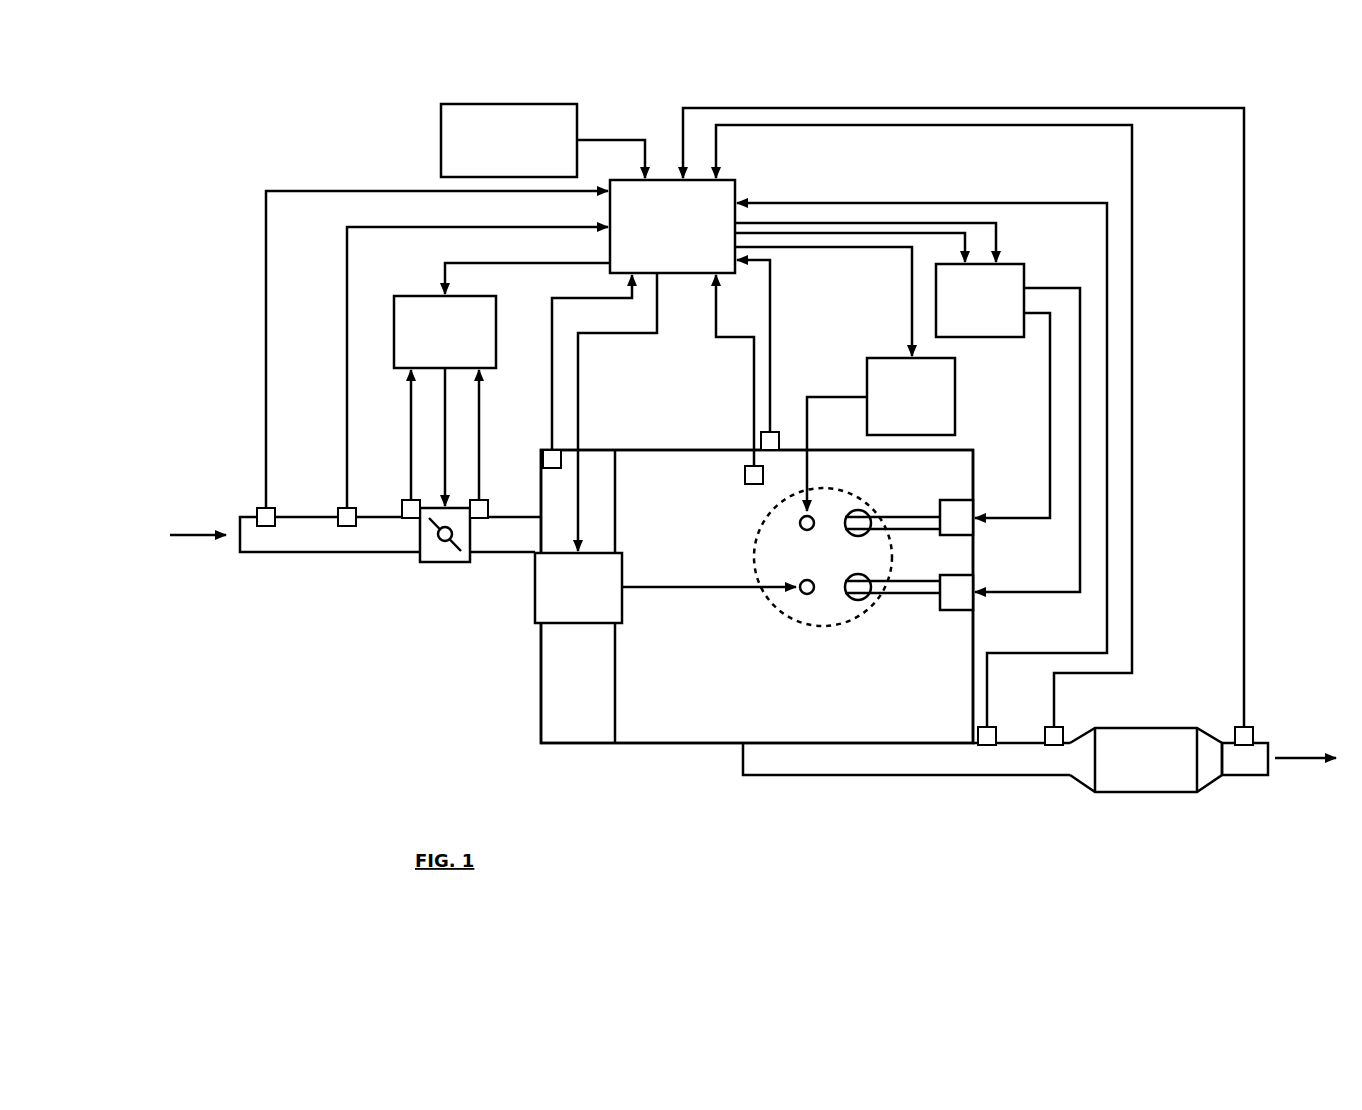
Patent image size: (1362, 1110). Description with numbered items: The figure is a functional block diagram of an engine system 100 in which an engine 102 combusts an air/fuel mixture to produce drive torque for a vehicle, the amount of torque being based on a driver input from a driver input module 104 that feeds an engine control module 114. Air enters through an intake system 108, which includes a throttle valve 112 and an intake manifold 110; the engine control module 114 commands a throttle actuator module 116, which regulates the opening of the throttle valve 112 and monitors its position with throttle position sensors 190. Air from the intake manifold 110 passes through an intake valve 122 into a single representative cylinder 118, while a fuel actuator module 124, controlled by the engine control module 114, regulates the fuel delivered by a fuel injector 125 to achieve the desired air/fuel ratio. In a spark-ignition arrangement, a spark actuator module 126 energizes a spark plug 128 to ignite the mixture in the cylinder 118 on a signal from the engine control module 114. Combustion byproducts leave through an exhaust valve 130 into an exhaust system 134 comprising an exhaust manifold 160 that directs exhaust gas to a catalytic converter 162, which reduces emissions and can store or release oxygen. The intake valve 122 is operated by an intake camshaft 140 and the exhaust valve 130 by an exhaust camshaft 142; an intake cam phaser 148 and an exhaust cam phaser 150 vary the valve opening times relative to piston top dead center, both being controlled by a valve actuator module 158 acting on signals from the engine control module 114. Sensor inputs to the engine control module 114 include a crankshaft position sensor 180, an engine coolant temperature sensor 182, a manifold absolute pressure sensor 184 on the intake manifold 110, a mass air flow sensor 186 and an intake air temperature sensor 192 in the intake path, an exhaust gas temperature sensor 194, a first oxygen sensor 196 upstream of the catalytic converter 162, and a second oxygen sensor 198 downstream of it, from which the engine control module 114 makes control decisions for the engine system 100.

The engine system 100 is at (255, 70).
The engine 102 is at (973, 462).
The driver input module 104 is at (441, 130).
The intake system 108 is at (404, 680).
The intake manifold 110 is at (541, 674).
The throttle valve 112 is at (440, 562).
The engine control module 114 is at (735, 184).
The throttle actuator module 116 is at (422, 296).
The cylinder 118 is at (782, 615).
The intake valve 122 is at (862, 510).
The fuel actuator module 124 is at (602, 623).
The fuel injector 125 is at (805, 595).
The spark actuator module 126 is at (955, 395).
The spark plug 128 is at (800, 522).
The exhaust valve 130 is at (858, 600).
The exhaust system 134 is at (1206, 823).
The intake camshaft 140 is at (908, 493).
The exhaust camshaft 142 is at (917, 593).
The intake cam phaser 148 is at (958, 500).
The exhaust cam phaser 150 is at (958, 610).
The valve actuator module 158 is at (1024, 290).
The exhaust manifold 160 is at (905, 775).
The catalytic converter 162 is at (1150, 728).
The crankshaft position sensor 180 is at (770, 432).
The engine coolant temperature sensor 182 is at (757, 484).
The manifold absolute pressure sensor 184 is at (548, 450).
The mass air flow sensor 186 is at (340, 508).
The throttle position sensor 190 is at (411, 518).
The intake air temperature sensor 192 is at (260, 508).
The exhaust gas temperature sensor 194 is at (992, 727).
The first oxygen sensor 196 is at (1060, 727).
The second oxygen sensor 198 is at (1252, 727).